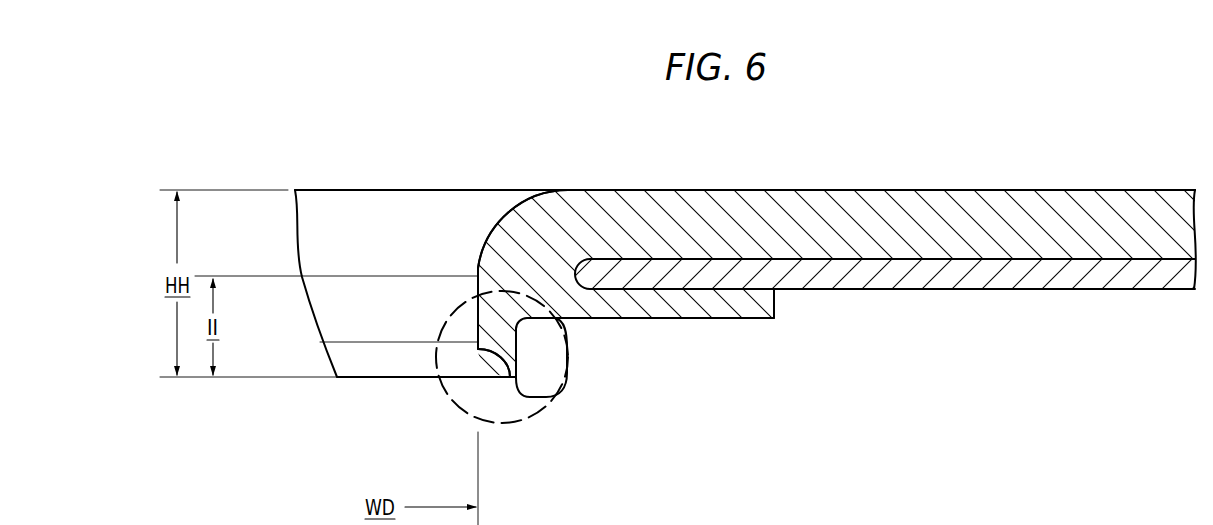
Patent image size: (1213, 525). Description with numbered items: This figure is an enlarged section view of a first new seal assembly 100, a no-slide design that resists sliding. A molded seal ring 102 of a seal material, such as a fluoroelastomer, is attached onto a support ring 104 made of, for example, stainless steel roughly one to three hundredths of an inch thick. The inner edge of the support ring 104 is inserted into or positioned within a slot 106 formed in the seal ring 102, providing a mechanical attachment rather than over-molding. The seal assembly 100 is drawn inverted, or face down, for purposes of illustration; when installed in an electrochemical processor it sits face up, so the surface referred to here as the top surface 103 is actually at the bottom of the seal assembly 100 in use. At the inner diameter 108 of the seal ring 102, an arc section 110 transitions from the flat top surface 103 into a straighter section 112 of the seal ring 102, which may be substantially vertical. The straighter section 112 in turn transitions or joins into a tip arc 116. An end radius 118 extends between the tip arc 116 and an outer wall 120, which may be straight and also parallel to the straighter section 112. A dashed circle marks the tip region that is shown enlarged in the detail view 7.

The seal assembly 100 is at (746, 265).
The seal ring 102 is at (1013, 210).
The top surface 103 is at (675, 187).
The support ring 104 is at (960, 273).
The slot 106 is at (786, 301).
The inner diameter 108 is at (386, 254).
The arc section 110 is at (484, 238).
The straighter section 112 is at (479, 285).
The tip arc 116 is at (479, 358).
The end radius 118 is at (541, 398).
The outer wall 120 is at (516, 352).
The FIG. 7 is at (534, 427).